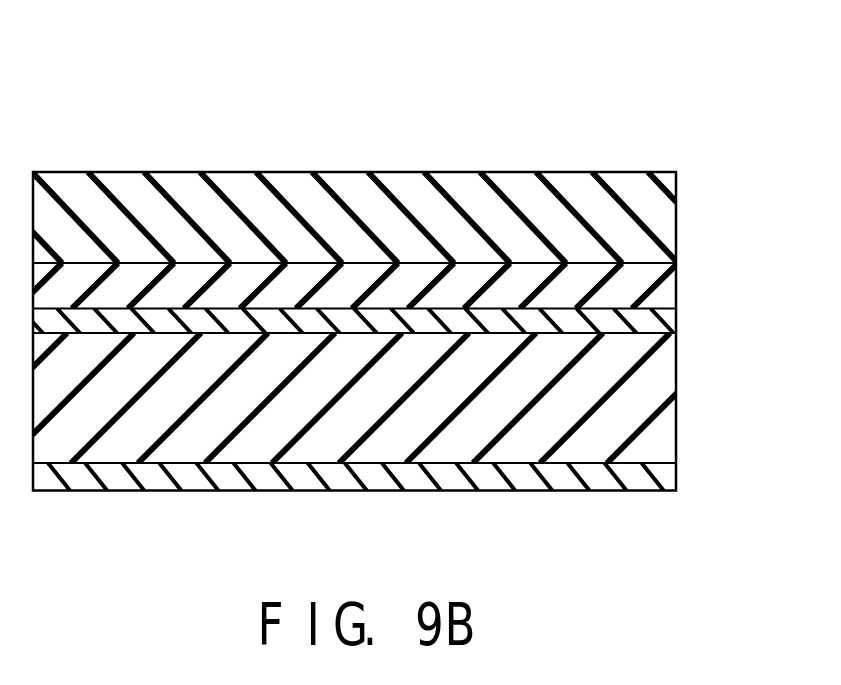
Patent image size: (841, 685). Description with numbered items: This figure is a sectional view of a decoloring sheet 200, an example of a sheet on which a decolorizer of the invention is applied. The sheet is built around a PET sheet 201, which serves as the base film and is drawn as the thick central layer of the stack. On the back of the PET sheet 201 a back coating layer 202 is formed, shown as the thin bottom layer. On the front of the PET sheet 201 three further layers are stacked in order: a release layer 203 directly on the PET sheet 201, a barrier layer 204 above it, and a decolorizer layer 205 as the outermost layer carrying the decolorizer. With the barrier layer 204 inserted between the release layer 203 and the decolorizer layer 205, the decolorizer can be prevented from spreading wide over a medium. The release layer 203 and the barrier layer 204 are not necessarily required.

The decoloring sheet 200 is at (555, 163).
The PET sheet 201 is at (667, 388).
The back coating layer 202 is at (667, 475).
The release layer 203 is at (665, 322).
The barrier layer 204 is at (663, 288).
The decolorizer layer 205 is at (667, 228).